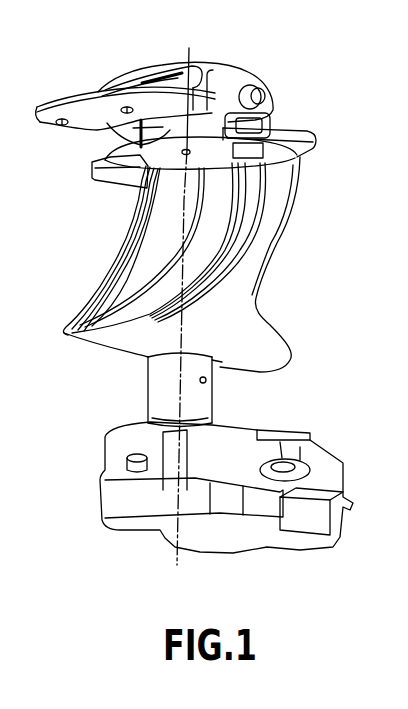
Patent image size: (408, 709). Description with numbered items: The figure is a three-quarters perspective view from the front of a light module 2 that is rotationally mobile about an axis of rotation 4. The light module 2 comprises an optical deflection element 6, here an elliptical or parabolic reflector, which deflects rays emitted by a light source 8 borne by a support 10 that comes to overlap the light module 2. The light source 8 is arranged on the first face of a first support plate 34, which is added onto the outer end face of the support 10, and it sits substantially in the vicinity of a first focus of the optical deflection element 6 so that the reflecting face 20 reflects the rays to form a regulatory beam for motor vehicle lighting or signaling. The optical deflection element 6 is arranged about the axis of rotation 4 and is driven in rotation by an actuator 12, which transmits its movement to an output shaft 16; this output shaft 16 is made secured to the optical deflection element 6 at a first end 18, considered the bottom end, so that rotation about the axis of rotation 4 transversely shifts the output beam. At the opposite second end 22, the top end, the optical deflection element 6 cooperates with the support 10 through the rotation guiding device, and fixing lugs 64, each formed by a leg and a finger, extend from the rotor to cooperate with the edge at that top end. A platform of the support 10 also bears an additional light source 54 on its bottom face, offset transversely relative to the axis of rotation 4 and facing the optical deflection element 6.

The light module 2 is at (295, 72).
The axis of rotation 4 is at (175, 564).
The optical deflection element 6 is at (207, 264).
The light source 8 is at (186, 160).
The support 10 is at (140, 138).
The actuator 12 is at (130, 447).
The output shaft 16 is at (170, 387).
The first end 18 is at (222, 363).
The reflecting face 20 is at (160, 255).
The second end 22 is at (303, 162).
The first support plate 34 is at (207, 160).
The additional light source 54 is at (83, 122).
The fixing lug 64 is at (92, 161).